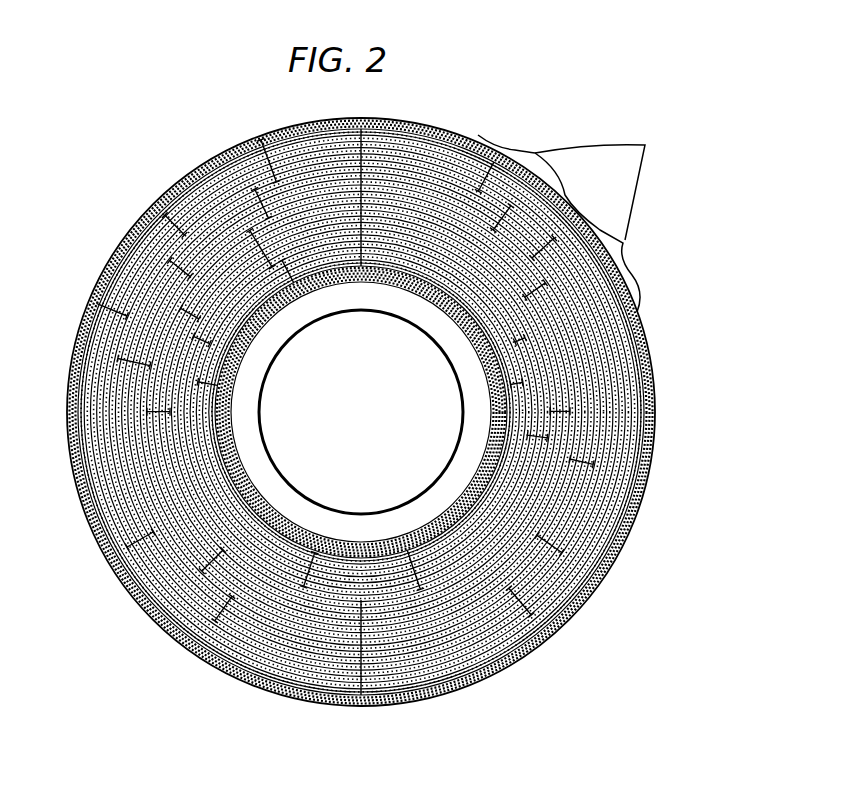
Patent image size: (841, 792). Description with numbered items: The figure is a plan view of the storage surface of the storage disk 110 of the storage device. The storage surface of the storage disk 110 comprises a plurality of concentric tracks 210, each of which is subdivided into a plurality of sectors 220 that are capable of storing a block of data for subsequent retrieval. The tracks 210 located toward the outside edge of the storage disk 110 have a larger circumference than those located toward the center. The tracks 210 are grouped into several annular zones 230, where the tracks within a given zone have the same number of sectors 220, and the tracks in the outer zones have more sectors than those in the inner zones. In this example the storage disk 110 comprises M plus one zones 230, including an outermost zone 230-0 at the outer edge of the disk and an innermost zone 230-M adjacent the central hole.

The storage disk 110 is at (399, 399).
The concentric tracks 210 is at (588, 586).
The sectors 220 is at (648, 143).
The annular zones 230 is at (414, 392).
The outermost zone 230-0 is at (262, 143).
The innermost zone 230-M is at (294, 262).